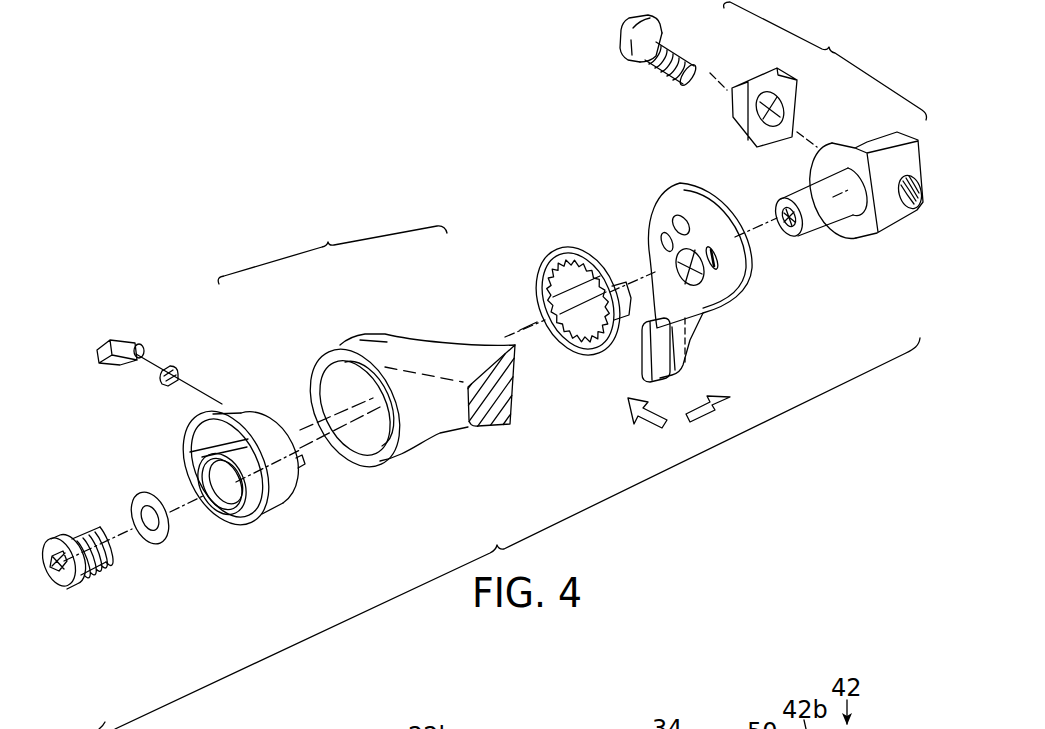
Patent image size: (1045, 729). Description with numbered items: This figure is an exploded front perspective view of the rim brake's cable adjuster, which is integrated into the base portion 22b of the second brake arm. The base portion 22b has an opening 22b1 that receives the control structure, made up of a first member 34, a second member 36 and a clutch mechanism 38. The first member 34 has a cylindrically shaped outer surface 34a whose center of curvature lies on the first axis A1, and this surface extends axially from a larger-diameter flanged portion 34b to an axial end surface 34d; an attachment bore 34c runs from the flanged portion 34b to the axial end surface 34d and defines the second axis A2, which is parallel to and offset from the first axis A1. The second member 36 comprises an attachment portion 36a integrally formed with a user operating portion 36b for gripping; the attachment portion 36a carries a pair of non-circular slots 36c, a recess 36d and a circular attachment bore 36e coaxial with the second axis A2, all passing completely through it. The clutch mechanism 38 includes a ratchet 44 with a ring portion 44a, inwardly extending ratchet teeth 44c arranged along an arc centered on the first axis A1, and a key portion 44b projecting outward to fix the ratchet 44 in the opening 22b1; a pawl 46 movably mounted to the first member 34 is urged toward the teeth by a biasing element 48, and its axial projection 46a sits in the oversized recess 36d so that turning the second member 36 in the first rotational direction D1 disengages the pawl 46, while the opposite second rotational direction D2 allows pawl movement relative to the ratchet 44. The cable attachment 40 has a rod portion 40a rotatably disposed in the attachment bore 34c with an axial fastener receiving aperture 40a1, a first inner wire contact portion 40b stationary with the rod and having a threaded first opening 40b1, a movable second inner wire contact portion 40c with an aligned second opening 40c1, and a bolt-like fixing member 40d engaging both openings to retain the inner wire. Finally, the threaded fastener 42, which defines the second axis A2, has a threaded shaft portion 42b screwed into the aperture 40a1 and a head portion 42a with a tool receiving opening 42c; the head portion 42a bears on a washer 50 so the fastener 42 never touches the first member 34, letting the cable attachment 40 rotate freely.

The base portion 22b is at (404, 439).
The opening 22b1 is at (365, 452).
The first member 34 is at (208, 462).
The cylindrically shaped outer surface 34a is at (231, 410).
The flanged portion 34b is at (187, 428).
The attachment bore 34c is at (221, 520).
The axial end surface 34d is at (264, 410).
The second member 36 is at (690, 269).
The attachment portion 36a is at (655, 210).
The user operating portion 36b is at (642, 372).
The slot 36c is at (663, 236).
The recess 36d is at (678, 216).
The attachment bore 36e is at (690, 328).
The clutch mechanism 38 is at (332, 253).
The cable attachment 40 is at (825, 61).
The rod portion 40a is at (805, 225).
The fastener receiving aperture 40a1 is at (777, 212).
The first inner wire contact portion 40b is at (877, 199).
The first opening 40b1 is at (908, 210).
The second inner wire contact portion 40c is at (802, 88).
The second opening 40c1 is at (783, 100).
The fixing member 40d is at (630, 65).
The threaded fastener 42 is at (83, 584).
The head portion 42a is at (69, 565).
The threaded shaft portion 42b is at (97, 567).
The tool receiving opening 42c is at (48, 580).
The ratchet 44 is at (552, 324).
The ring portion 44a is at (562, 350).
The key portion 44b is at (625, 289).
The ratchet teeth 44c is at (541, 296).
The pawl 46 is at (103, 341).
The projection 46a is at (137, 345).
The biasing element 48 is at (175, 368).
The washer 50 is at (146, 545).
The first axis A1 is at (301, 428).
The second axis A2 is at (312, 452).
The first rotational direction D1 is at (657, 427).
The second rotational direction D2 is at (690, 393).